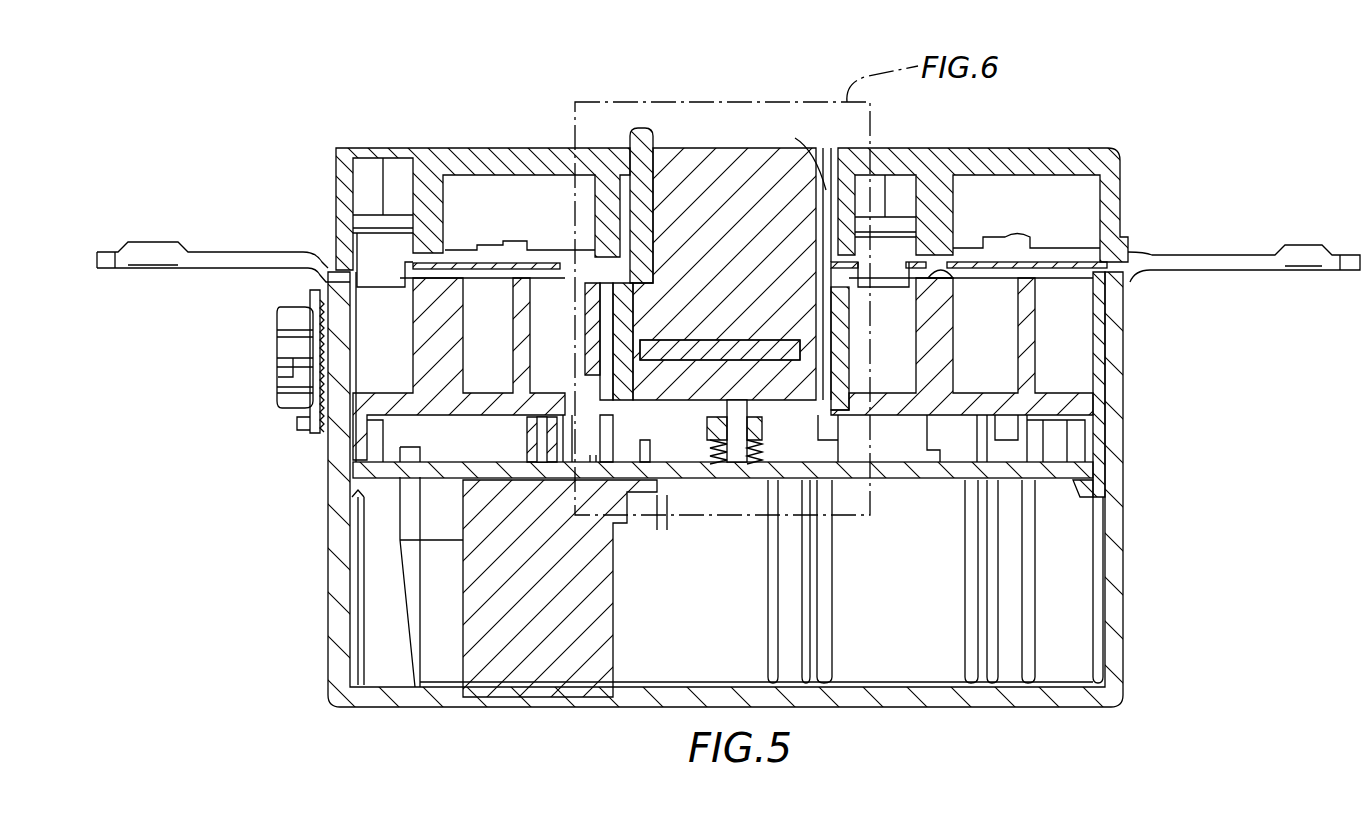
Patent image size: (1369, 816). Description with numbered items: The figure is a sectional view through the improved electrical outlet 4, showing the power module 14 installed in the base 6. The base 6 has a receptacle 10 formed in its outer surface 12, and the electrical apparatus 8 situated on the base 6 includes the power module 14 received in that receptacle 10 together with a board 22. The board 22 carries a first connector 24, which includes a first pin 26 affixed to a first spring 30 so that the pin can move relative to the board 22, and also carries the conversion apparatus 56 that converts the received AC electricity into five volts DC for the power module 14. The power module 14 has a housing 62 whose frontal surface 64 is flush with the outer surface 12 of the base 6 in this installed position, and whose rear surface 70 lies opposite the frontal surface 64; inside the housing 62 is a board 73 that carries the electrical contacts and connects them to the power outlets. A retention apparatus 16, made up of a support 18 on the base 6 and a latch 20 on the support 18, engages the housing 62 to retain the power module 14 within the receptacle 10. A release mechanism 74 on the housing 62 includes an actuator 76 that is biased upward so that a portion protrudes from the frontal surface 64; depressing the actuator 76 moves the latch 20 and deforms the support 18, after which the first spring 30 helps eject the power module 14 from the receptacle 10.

The electrical outlet 4 is at (1100, 150).
The base 6 is at (1134, 174).
The electrical apparatus 8 is at (694, 486).
The receptacle 10 is at (799, 156).
The outer surface 12 is at (948, 152).
The power module 14 is at (732, 230).
The retention apparatus 16 is at (596, 298).
The support 18 is at (594, 318).
The latch 20 is at (590, 258).
The board 22 is at (898, 479).
The first connector 24 is at (726, 412).
The first pin 26 is at (720, 480).
The first spring 30 is at (760, 430).
The conversion apparatus 56 is at (596, 452).
The housing 62 is at (850, 236).
The frontal surface 64 is at (712, 146).
The rear surface 70 is at (637, 420).
The board 73 is at (700, 340).
The release mechanism 74 is at (668, 195).
The actuator 76 is at (643, 128).